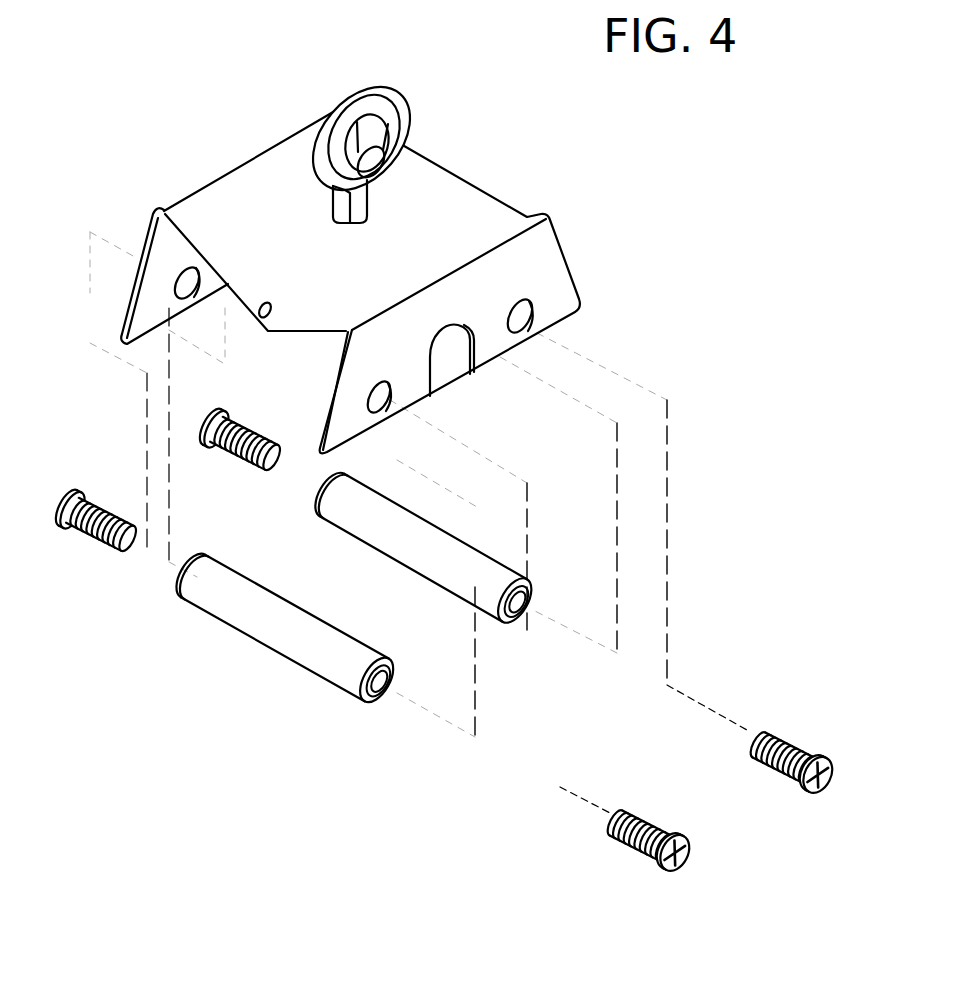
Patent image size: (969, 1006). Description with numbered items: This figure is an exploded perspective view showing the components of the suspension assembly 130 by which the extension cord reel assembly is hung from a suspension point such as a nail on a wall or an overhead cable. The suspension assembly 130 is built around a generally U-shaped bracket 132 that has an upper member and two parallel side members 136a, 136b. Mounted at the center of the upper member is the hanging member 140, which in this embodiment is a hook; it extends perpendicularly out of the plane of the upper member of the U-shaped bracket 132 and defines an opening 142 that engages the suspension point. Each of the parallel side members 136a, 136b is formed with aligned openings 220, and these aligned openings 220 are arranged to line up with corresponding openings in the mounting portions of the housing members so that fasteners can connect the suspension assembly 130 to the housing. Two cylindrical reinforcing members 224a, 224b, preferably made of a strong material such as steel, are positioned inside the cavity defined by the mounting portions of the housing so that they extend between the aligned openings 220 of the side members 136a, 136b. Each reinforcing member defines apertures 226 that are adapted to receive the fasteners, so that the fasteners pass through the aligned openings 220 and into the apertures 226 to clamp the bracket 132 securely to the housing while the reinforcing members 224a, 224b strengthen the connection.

The suspension assembly 130 is at (467, 125).
The U-shaped bracket 132 is at (464, 208).
The side member 136a is at (552, 253).
The side member 136b is at (206, 183).
The hanging member 140 is at (347, 93).
The opening 142 is at (364, 137).
The aligned openings 220 is at (177, 298).
The cylindrical reinforcing member 224a is at (280, 640).
The cylindrical reinforcing member 224b is at (388, 540).
The apertures 226 is at (383, 702).